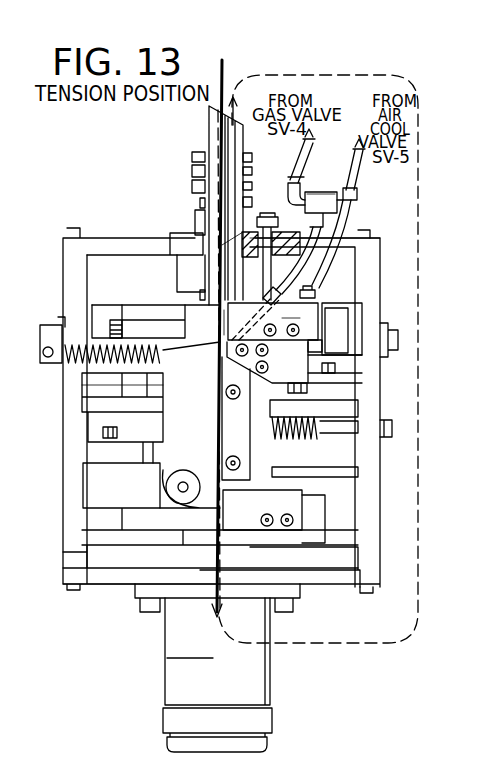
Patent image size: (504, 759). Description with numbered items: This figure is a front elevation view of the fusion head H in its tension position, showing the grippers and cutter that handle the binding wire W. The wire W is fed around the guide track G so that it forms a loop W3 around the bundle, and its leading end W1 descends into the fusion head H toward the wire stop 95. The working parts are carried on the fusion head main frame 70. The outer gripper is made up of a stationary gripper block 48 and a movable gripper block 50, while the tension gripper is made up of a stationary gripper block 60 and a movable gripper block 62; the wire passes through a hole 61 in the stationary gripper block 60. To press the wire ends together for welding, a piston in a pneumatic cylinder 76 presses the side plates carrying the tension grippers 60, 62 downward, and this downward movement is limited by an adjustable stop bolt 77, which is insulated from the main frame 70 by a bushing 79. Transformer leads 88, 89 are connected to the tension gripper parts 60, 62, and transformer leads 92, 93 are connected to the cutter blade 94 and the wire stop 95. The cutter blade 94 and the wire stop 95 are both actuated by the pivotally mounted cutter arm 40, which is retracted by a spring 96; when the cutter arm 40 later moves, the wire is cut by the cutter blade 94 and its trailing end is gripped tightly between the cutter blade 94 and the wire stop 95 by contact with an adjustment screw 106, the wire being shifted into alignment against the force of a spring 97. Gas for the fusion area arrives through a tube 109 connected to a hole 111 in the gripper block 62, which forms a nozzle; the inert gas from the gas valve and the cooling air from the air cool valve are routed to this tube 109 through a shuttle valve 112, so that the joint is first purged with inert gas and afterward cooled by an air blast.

The binding wire W is at (224, 70).
The wire loop W3 is at (22, 186).
The guide track G is at (209, 140).
The fusion head H is at (137, 238).
The leading end of the wire W1 is at (216, 246).
The bushing 79 is at (290, 240).
The shuttle valve 112 is at (327, 192).
The tube 109 is at (348, 215).
The main frame 70 is at (345, 240).
The adjustable stop bolt 77 is at (297, 268).
The transformer lead 89 is at (325, 305).
The movable gripper block 62 is at (312, 309).
The adjustment screw 106 is at (385, 357).
The spring 96 is at (68, 345).
The transformer lead 88 is at (116, 318).
The pneumatic cylinder 76 is at (177, 267).
The stationary gripper block 60 is at (153, 327).
The hole 61 is at (222, 328).
The cutter arm 40 is at (120, 385).
The transformer lead 92 is at (103, 432).
The cutter blade 94 is at (165, 478).
The stationary gripper block 48 is at (143, 523).
The movable gripper block 50 is at (251, 520).
The spring 97 is at (300, 435).
The wire stop 95 is at (300, 372).
The transformer lead 93 is at (310, 383).
The hole 111 is at (270, 313).